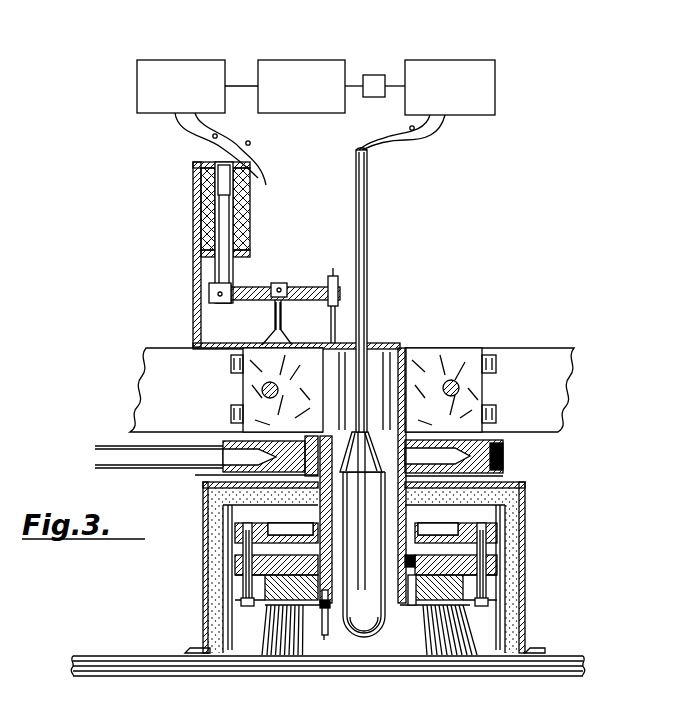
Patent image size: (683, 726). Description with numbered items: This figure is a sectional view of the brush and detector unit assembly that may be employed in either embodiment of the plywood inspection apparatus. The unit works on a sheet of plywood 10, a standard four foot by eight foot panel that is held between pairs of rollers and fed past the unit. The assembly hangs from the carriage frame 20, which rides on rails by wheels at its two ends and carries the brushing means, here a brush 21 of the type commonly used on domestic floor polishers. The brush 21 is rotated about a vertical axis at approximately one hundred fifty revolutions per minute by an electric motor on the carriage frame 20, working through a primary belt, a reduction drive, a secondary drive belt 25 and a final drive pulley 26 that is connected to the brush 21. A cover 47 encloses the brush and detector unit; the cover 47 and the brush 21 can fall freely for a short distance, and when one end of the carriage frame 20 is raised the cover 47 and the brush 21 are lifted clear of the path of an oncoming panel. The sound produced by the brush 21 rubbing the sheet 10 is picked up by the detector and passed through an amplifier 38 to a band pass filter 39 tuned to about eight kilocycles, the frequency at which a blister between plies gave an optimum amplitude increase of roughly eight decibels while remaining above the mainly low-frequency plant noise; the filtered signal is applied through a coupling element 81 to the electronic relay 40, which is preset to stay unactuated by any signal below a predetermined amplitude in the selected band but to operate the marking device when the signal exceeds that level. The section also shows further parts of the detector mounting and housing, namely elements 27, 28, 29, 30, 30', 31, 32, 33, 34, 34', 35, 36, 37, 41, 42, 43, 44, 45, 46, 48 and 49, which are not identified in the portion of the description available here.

The sheet of plywood 10 is at (348, 672).
The carriage frame 20 is at (140, 374).
The brush 21 is at (477, 638).
The secondary drive belt 25 is at (105, 461).
The final drive pulley 26 is at (505, 476).
The retaining ring 27 is at (262, 604).
The fiber bundle 28 is at (282, 650).
The spacer block 29 is at (245, 571).
The clamping plate 30 is at (357, 558).
The bolt 30' is at (412, 579).
The ring 31 is at (240, 590).
The top plate 32 is at (235, 526).
The chamber 33 is at (315, 512).
The housing 34 is at (375, 500).
The housing inner member 34' is at (412, 605).
The insulating block 35 is at (252, 347).
The transducer tip 36 is at (355, 637).
The transducer sleeve 37 is at (397, 607).
The high gain audio amplifier 38 is at (468, 62).
The filter 39 is at (288, 62).
The electronic relay 40 is at (188, 62).
The solenoid 41 is at (245, 232).
The plunger 42 is at (233, 270).
The arm 43 is at (303, 287).
The rod 44 is at (334, 308).
The pivot 45 is at (330, 343).
The pin 46 is at (326, 637).
The cover 47 is at (205, 505).
The base plate 48 is at (178, 653).
The foot 49 is at (207, 634).
The rectifier 81 is at (375, 75).